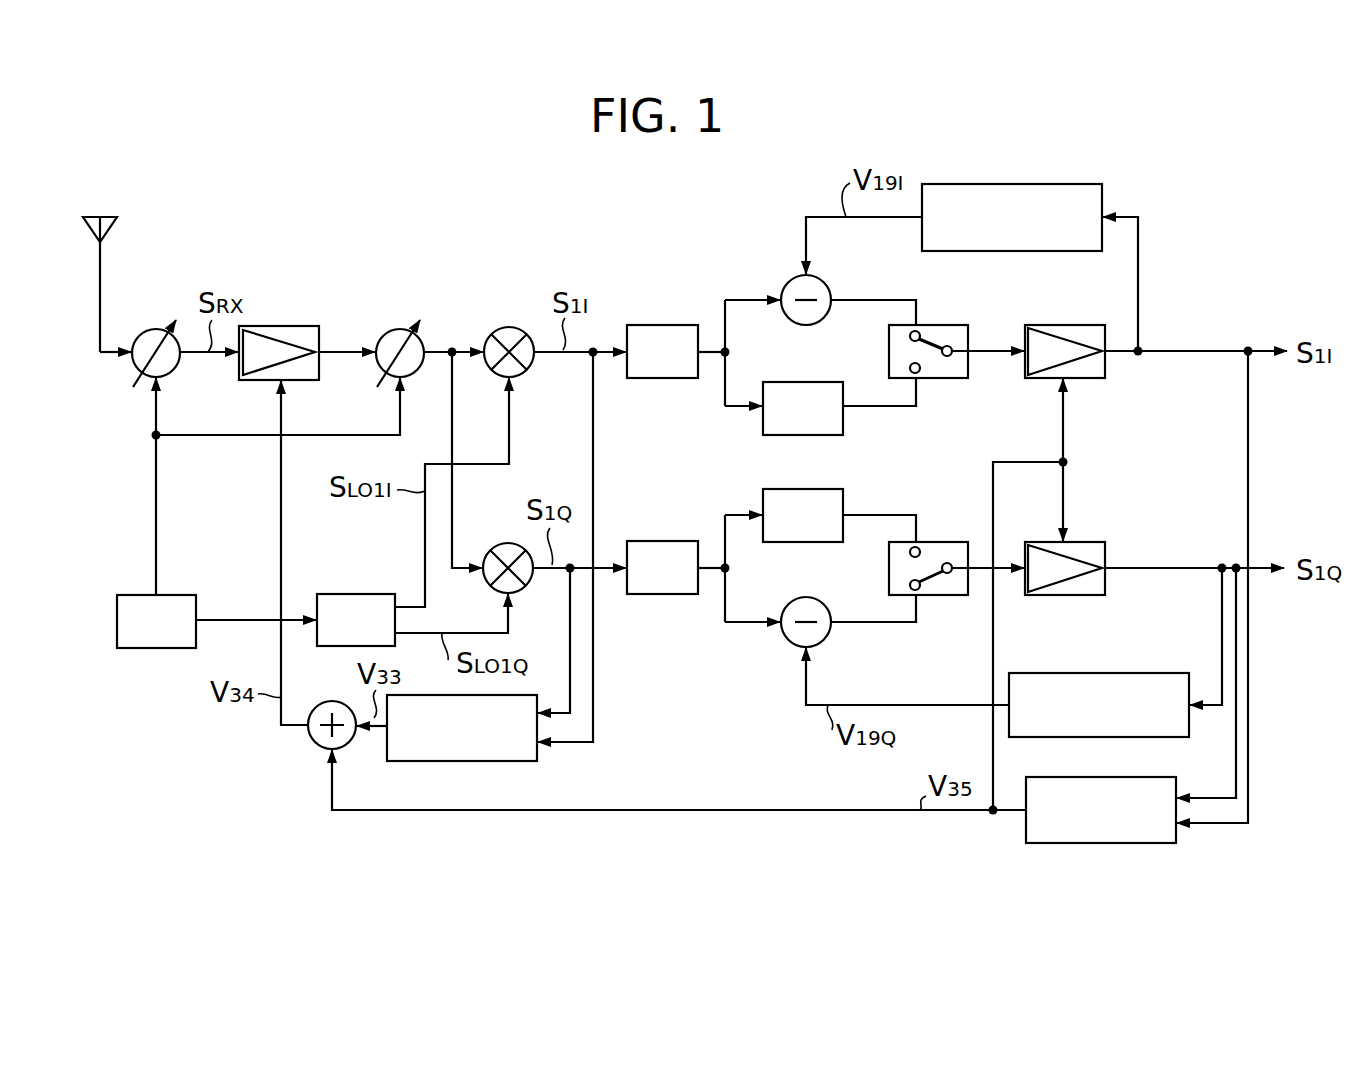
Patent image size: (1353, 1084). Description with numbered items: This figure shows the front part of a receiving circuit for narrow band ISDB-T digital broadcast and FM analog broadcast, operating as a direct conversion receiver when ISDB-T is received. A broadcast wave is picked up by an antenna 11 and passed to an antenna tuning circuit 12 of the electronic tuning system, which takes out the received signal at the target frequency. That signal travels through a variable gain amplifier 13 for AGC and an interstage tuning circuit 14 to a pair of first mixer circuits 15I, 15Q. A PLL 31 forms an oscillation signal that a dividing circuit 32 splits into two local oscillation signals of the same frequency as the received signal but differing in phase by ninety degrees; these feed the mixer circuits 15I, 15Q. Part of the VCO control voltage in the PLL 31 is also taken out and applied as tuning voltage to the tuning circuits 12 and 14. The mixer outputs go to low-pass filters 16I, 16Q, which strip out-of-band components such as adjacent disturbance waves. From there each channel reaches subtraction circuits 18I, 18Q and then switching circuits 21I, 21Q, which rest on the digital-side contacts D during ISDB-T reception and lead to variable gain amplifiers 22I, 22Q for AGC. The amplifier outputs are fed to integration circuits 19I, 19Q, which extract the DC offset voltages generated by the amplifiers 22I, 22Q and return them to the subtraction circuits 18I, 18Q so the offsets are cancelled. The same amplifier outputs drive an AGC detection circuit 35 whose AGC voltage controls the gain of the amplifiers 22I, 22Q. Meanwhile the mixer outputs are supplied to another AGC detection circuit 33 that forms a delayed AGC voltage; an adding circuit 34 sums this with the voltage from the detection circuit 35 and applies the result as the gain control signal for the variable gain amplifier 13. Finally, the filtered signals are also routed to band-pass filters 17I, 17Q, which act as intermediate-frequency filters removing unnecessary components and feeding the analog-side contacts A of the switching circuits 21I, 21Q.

The antenna 11 is at (100, 298).
The antenna tuning circuit 12 is at (151, 329).
The variable gain amplifier 13 is at (298, 326).
The interstage tuning circuit 14 is at (389, 330).
The first mixer circuit 15I is at (504, 328).
The first mixer circuit 15Q is at (492, 543).
The low-pass filter 16I is at (665, 325).
The low-pass filter 16Q is at (665, 541).
The band-pass filter 17I is at (843, 422).
The band-pass filter 17Q is at (843, 500).
The subtraction circuit 18I is at (826, 283).
The subtraction circuit 18Q is at (826, 638).
The integration circuit 19I is at (1048, 184).
The integration circuit 19Q is at (1104, 673).
The switching circuit 21I is at (959, 325).
The switching circuit 21Q is at (945, 595).
The variable gain amplifier 22I is at (1092, 325).
The variable gain amplifier 22Q is at (1106, 545).
The PLL 31 is at (143, 648).
The dividing circuit 32 is at (372, 594).
The AGC detection circuit 33 is at (502, 761).
The adding circuit 34 is at (314, 743).
The AGC detection circuit 35 is at (1115, 843).